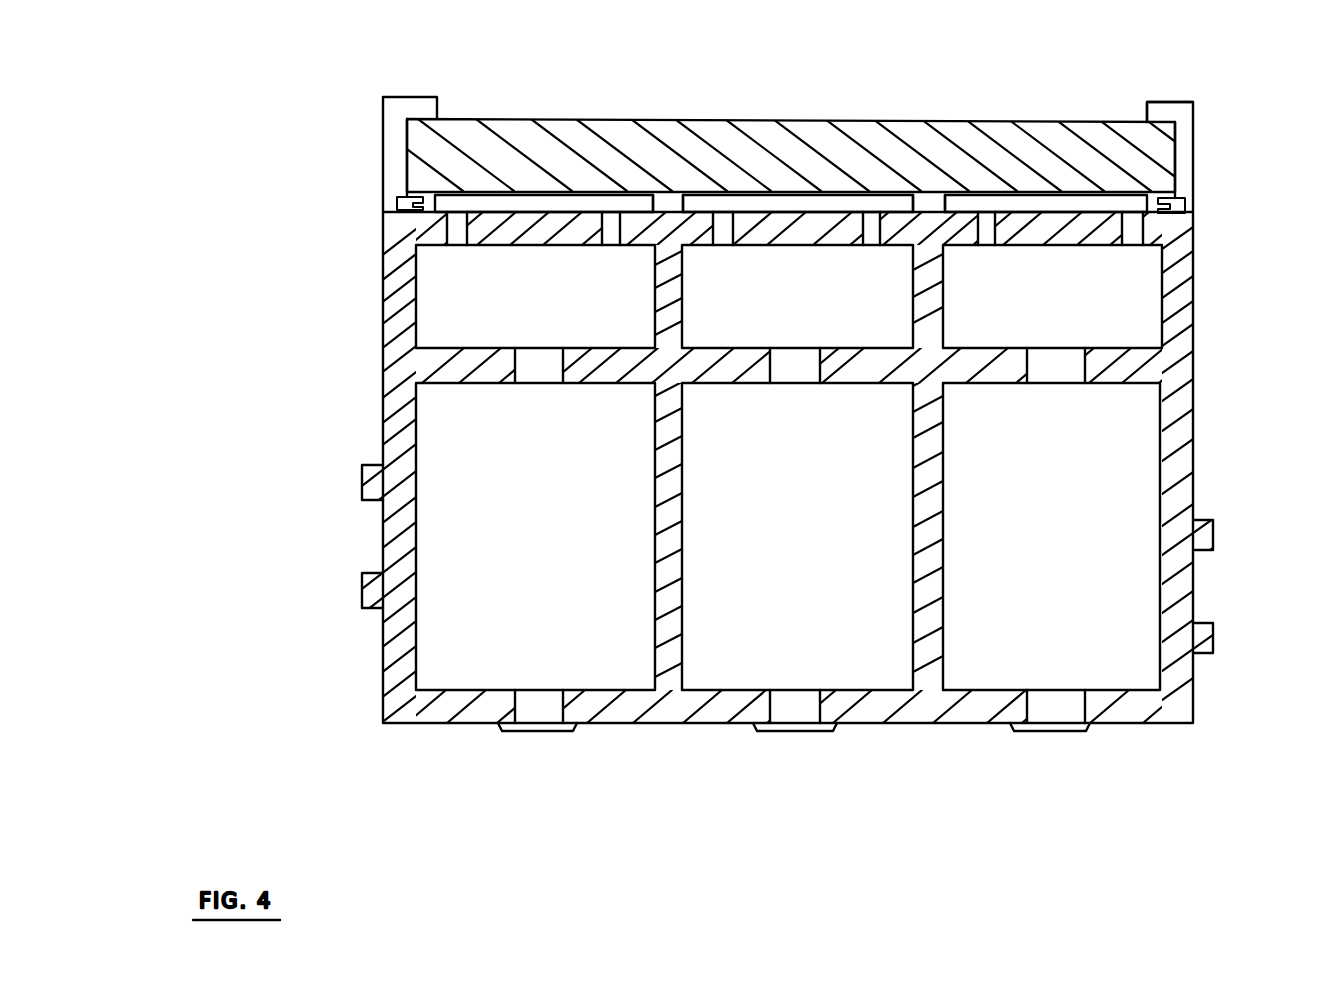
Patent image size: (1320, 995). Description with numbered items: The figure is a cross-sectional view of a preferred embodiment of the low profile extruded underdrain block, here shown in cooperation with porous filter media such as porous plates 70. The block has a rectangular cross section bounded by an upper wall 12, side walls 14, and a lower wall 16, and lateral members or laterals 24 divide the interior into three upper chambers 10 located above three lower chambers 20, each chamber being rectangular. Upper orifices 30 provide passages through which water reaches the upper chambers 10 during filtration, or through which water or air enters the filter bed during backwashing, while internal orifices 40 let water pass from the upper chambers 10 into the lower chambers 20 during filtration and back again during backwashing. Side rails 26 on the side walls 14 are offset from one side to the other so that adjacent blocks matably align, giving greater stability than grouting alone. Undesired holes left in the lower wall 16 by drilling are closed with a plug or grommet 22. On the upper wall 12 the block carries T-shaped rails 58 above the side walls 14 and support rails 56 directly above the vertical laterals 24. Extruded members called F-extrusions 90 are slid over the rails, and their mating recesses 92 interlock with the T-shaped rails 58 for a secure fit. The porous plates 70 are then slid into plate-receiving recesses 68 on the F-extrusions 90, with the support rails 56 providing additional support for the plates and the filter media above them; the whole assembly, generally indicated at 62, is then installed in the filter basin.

The upper chambers 10 is at (1143, 298).
The upper wall 12 is at (510, 210).
The side walls 14 is at (383, 628).
The lower wall 16 is at (1170, 725).
The lower chambers 20 is at (1167, 442).
The plug or grommet 22 is at (498, 724).
The laterals 24 is at (453, 372).
The side rails 26 is at (362, 578).
The upper orifices 30 is at (430, 252).
The internal orifices 40 is at (530, 350).
The support rails 56 is at (655, 210).
The T-shaped rails 58 is at (1187, 207).
The container 62 is at (1124, 742).
The plate-receiving recesses 68 is at (1160, 123).
The porous plates 70 is at (1068, 125).
The F-extrusions 90 is at (1197, 133).
The mating recesses 92 is at (1177, 198).